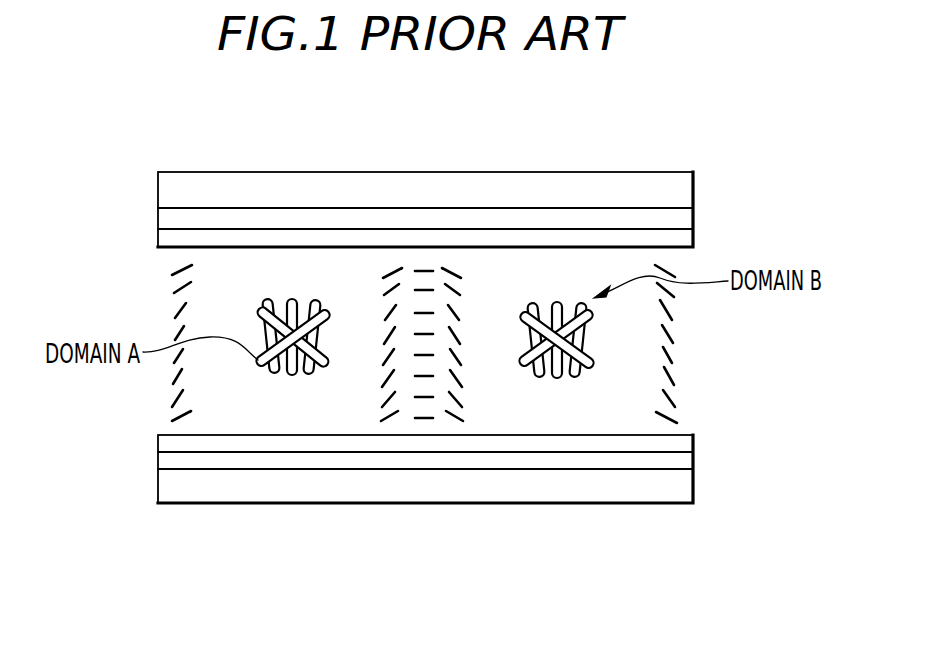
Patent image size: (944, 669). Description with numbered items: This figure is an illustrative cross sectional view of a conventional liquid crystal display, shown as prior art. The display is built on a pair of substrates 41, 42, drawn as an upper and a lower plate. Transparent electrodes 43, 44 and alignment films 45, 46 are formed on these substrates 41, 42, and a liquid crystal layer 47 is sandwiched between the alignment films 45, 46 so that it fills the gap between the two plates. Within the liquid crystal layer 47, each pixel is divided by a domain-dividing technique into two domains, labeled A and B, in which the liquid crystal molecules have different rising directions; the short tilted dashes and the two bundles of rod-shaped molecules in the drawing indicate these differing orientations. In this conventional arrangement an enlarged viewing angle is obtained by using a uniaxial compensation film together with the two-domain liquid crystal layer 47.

The substrate 41 is at (632, 488).
The substrate 42 is at (611, 193).
The transparent electrode 43 is at (455, 455).
The transparent electrode 44 is at (402, 222).
The alignment film 45 is at (274, 440).
The alignment film 46 is at (248, 238).
The liquid crystal layer 47 is at (630, 338).